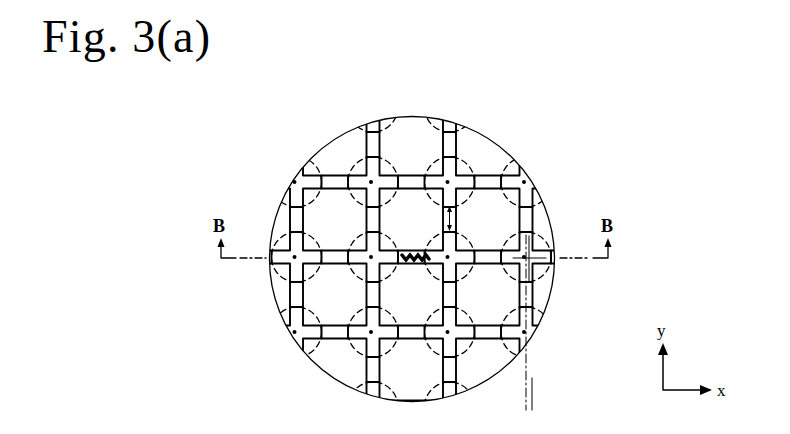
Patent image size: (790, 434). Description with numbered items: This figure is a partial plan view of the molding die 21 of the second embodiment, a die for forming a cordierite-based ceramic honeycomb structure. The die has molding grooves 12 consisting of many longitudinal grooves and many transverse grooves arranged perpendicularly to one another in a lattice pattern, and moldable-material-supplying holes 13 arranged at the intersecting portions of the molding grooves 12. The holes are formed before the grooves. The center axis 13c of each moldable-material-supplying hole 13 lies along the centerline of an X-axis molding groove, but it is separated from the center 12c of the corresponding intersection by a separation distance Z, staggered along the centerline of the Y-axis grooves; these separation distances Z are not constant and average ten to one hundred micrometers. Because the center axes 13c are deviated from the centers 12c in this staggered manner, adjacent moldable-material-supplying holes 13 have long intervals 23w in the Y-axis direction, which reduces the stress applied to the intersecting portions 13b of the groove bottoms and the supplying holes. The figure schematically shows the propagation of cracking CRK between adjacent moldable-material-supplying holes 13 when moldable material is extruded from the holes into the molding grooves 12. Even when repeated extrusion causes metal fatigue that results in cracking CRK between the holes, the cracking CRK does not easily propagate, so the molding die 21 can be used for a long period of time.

The molding die 21 is at (274, 157).
The molding grooves 12 is at (375, 367).
The center of intersection 12c is at (527, 260).
The moldable-material-supplying holes 13 is at (550, 285).
The intersecting portions 13b is at (433, 258).
The center axis 13c is at (535, 258).
The long intervals 23w is at (456, 226).
The cracking CRK is at (410, 252).
The separation distance Z is at (503, 403).